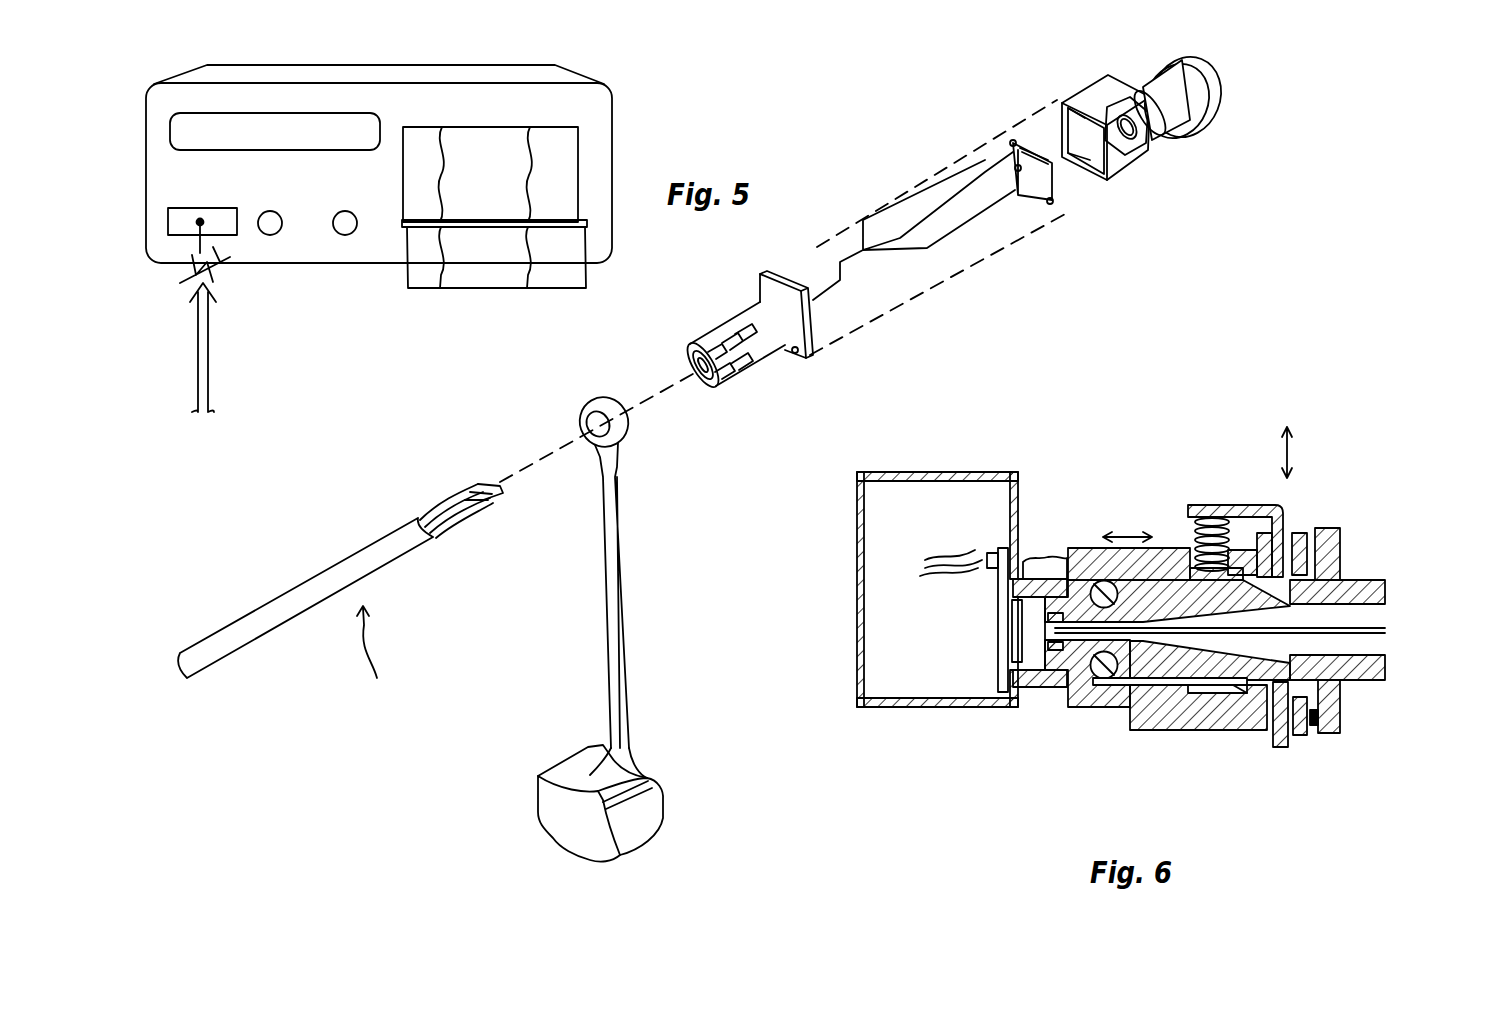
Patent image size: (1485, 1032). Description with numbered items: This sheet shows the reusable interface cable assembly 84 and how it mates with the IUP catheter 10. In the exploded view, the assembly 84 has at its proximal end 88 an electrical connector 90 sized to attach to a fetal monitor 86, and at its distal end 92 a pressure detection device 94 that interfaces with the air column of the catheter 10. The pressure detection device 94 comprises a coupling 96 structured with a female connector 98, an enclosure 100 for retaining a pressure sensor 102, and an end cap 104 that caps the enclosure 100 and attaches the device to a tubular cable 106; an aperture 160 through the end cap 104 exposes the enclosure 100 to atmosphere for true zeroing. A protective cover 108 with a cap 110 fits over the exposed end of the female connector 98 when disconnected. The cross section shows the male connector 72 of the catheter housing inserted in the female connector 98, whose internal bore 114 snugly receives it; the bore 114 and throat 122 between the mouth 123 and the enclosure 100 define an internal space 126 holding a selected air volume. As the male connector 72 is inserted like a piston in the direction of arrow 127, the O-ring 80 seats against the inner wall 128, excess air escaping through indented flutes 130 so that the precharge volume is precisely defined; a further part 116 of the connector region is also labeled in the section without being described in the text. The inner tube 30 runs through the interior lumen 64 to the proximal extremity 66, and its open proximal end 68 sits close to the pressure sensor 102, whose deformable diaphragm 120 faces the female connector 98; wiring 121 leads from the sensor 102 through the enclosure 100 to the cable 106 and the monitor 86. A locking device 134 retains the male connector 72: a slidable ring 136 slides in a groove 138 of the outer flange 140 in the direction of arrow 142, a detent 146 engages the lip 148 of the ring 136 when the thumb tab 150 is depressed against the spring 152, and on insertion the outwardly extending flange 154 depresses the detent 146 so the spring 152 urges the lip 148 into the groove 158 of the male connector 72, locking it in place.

In FIG. 6, the IUP catheter 10 is at (1350, 495).
In FIG. 6, the inner tube 30 is at (1388, 630).
In FIG. 6, the interior lumen 64 is at (1365, 575).
In FIG. 6, the proximal extremity 66 is at (1035, 690).
In FIG. 6, the proximal end 68 is at (1052, 698).
In FIG. 6, the male connector 72 is at (1154, 732).
In FIG. 6, the O-ring 80 is at (1090, 712).
In FIG. 5, the reusable interface cable assembly 84 is at (214, 378).
In FIG. 5, the fetal monitor 86 is at (542, 72).
In FIG. 5, the proximal end 88 is at (220, 262).
In FIG. 5, the electrical connector 90 is at (178, 236).
In FIG. 5, the distal end 92 is at (402, 512).
In FIG. 5, the pressure detection device 94 is at (948, 312).
In FIG. 5, the coupling 96 is at (1061, 147).
In FIG. 6, the coupling 96 is at (1005, 455).
In FIG. 5, the female connector 98 is at (1236, 122).
In FIG. 6, the female connector 98 is at (1093, 547).
In FIG. 5, the enclosure 100 is at (1120, 165).
In FIG. 6, the enclosure 100 is at (930, 470).
In FIG. 5, the pressure sensor 102 is at (1012, 145).
In FIG. 6, the pressure sensor 102 is at (998, 606).
In FIG. 5, the end cap 104 is at (772, 292).
In FIG. 5, the tubular cable 106 is at (235, 635).
In FIG. 5, the protective cover 108 is at (625, 600).
In FIG. 5, the cap 110 is at (638, 830).
In FIG. 6, the internal bore 114 is at (1122, 708).
In FIG. 6, the outer sleeve 116 is at (1079, 548).
In FIG. 6, the deformable diaphragm 120 is at (1010, 630).
In FIG. 5, the wiring 121 is at (876, 175).
In FIG. 6, the wiring 121 is at (963, 550).
In FIG. 6, the throat 122 is at (1050, 557).
In FIG. 6, the mouth 123 is at (1276, 762).
In FIG. 6, the internal space 126 is at (1020, 682).
In FIG. 6, the arrow 127 is at (1120, 533).
In FIG. 6, the inner wall 128 is at (1177, 553).
In FIG. 6, the indented flutes 130 is at (1183, 547).
In FIG. 5, the locking device 134 is at (1238, 82).
In FIG. 6, the locking device 134 is at (1275, 447).
In FIG. 6, the slidable ring 136 is at (1280, 517).
In FIG. 6, the groove 138 is at (1252, 733).
In FIG. 6, the outer flange 140 is at (1287, 748).
In FIG. 6, the arrow 142 is at (1292, 450).
In FIG. 6, the detent 146 is at (1312, 736).
In FIG. 6, the lip 148 is at (1360, 680).
In FIG. 6, the thumb tab 150 is at (1230, 507).
In FIG. 6, the spring 152 is at (1208, 520).
In FIG. 6, the outwardly extending flange 154 is at (1330, 735).
In FIG. 6, the groove 158 is at (1386, 660).
In FIG. 5, the aperture 160 is at (793, 358).